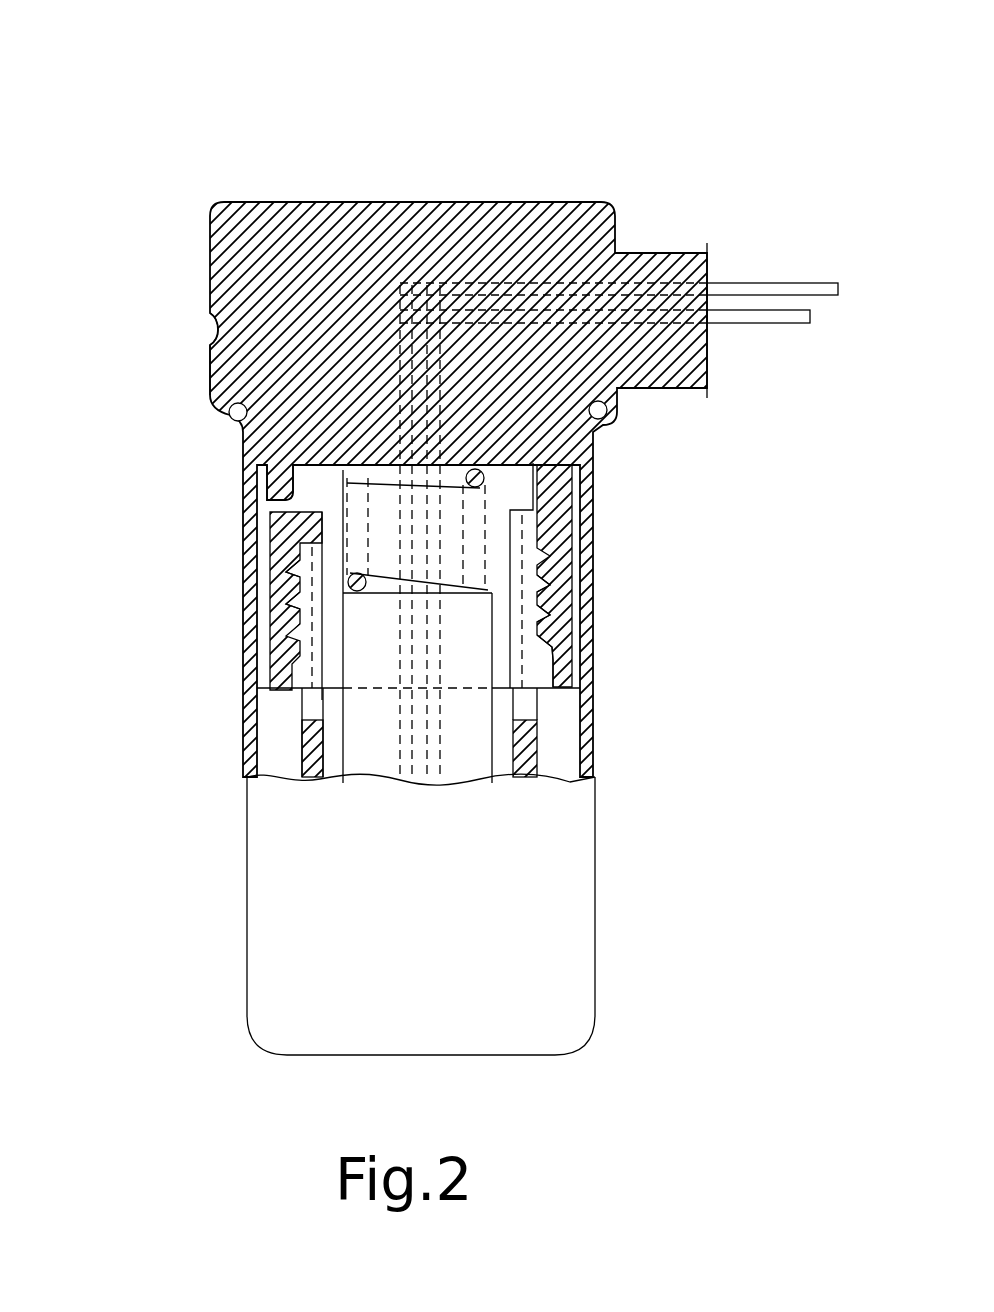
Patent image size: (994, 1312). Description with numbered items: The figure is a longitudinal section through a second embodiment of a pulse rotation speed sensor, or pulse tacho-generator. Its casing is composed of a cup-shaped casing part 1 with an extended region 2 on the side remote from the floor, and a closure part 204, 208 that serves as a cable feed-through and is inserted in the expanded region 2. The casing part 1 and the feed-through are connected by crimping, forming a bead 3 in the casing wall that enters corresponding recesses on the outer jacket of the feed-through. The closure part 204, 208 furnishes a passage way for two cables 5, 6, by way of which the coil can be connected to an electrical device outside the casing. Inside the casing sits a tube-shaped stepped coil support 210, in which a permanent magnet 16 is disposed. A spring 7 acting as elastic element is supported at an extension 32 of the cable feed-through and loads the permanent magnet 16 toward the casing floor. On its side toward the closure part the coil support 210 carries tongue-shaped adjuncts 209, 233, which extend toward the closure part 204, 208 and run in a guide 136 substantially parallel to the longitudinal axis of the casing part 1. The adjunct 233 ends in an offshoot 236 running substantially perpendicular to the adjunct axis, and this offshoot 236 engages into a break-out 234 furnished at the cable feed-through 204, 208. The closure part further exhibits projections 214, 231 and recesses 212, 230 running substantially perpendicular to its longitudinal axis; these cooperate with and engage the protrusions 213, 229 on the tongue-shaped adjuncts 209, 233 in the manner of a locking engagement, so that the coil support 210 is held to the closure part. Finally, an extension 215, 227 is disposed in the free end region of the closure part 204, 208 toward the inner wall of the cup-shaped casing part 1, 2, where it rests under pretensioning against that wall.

The cup-shaped casing part 1 is at (233, 447).
The extended region 2 is at (212, 378).
The bead 3 is at (213, 327).
The cable 5 is at (428, 262).
The cable 6 is at (493, 293).
The spring 7 is at (473, 530).
The permanent magnet 16 is at (473, 685).
The extension 32 is at (262, 481).
The guide 136 is at (540, 673).
The closure part 204 is at (255, 206).
The closure part 208 is at (662, 253).
The tongue-shaped adjunct 209 is at (540, 528).
The coil support 210 is at (312, 707).
The recess 212 is at (540, 578).
The protrusion 213 is at (545, 609).
The projection 214 is at (550, 650).
The extension 215 is at (545, 683).
The extension 227 is at (300, 695).
The protrusion 229 is at (300, 655).
The recess 230 is at (285, 615).
The projection 231 is at (268, 583).
The tongue-shaped adjunct 233 is at (312, 748).
The break-out 234 is at (278, 547).
The offshoot 236 is at (272, 498).